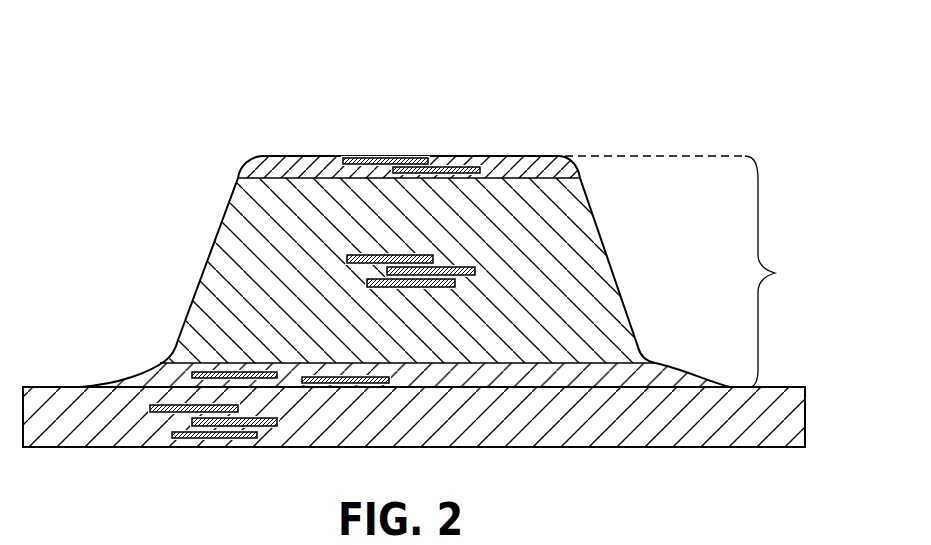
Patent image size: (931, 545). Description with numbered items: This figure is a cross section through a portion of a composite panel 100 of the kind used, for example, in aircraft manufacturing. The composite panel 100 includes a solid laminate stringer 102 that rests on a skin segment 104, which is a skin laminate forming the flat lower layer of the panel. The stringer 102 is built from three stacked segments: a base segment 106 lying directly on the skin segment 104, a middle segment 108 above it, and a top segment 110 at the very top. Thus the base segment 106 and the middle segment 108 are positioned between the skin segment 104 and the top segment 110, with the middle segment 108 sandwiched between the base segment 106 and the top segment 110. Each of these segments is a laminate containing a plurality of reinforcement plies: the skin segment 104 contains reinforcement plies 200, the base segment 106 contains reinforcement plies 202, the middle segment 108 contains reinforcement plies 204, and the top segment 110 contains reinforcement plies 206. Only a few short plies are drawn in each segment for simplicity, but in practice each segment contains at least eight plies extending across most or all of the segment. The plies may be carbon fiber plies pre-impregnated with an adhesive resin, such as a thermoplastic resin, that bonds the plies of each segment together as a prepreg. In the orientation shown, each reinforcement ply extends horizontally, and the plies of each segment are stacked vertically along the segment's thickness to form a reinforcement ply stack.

The composite panel 100 is at (140, 110).
The solid laminate stringer 102 is at (689, 271).
The skin segment 104 is at (760, 438).
The base segment 106 is at (152, 378).
The middle segment 108 is at (230, 262).
The top segment 110 is at (262, 163).
The reinforcement plies 200 is at (173, 422).
The reinforcement plies 202 is at (410, 376).
The reinforcement plies 204 is at (462, 255).
The reinforcement plies 206 is at (492, 169).